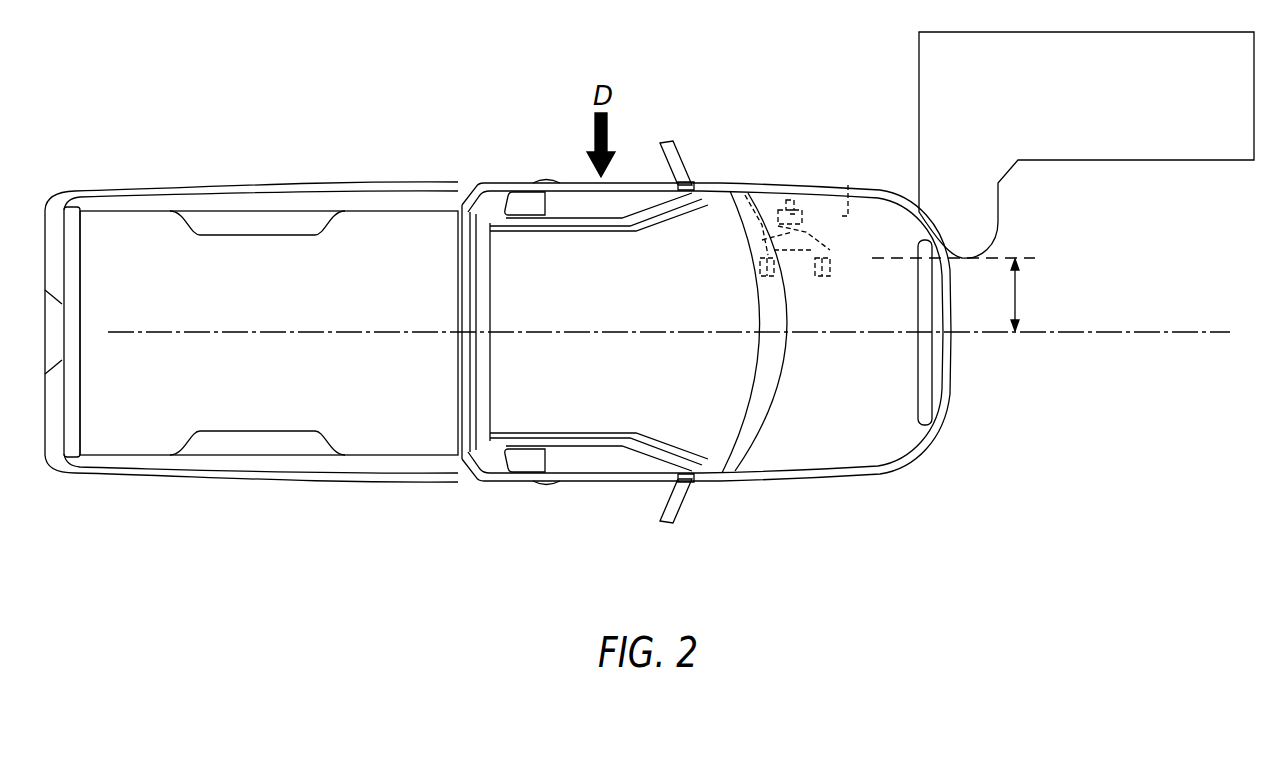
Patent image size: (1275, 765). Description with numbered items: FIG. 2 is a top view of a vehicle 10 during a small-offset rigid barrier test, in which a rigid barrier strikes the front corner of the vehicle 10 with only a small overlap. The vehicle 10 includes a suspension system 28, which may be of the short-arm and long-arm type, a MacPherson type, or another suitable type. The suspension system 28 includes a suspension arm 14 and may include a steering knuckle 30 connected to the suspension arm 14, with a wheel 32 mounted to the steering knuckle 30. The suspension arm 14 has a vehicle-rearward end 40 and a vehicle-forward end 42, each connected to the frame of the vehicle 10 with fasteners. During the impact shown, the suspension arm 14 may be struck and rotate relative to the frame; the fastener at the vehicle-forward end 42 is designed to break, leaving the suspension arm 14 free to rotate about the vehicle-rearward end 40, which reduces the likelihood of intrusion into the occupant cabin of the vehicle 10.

The vehicle 10 is at (492, 79).
The suspension arm 14 is at (805, 236).
The suspension system 28 is at (753, 266).
The steering knuckle 30 is at (799, 205).
The wheel 32 is at (852, 200).
The vehicle-rearward end 40 is at (745, 195).
The vehicle-forward end 42 is at (834, 262).